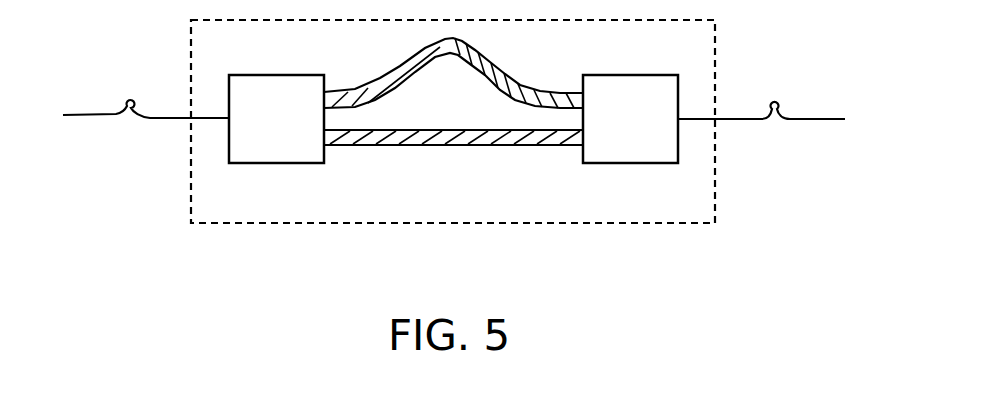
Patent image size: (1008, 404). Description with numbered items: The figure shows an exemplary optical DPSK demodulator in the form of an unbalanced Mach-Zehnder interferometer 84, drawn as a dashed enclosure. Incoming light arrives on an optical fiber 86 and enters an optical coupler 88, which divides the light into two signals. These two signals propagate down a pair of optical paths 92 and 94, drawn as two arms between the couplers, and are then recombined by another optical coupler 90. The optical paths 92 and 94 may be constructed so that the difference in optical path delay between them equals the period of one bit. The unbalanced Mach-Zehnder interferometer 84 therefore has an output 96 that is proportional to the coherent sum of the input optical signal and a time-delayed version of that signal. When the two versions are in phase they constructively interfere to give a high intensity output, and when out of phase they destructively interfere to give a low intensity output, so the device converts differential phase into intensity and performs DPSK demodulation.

The unbalanced Mach-Zehnder interferometer 84 is at (457, 223).
The optical fiber 86 is at (93, 115).
The optical coupler 88 is at (278, 163).
The optical coupler 90 is at (632, 163).
The optical path 92 is at (505, 66).
The optical path 94 is at (473, 145).
The output 96 is at (812, 119).